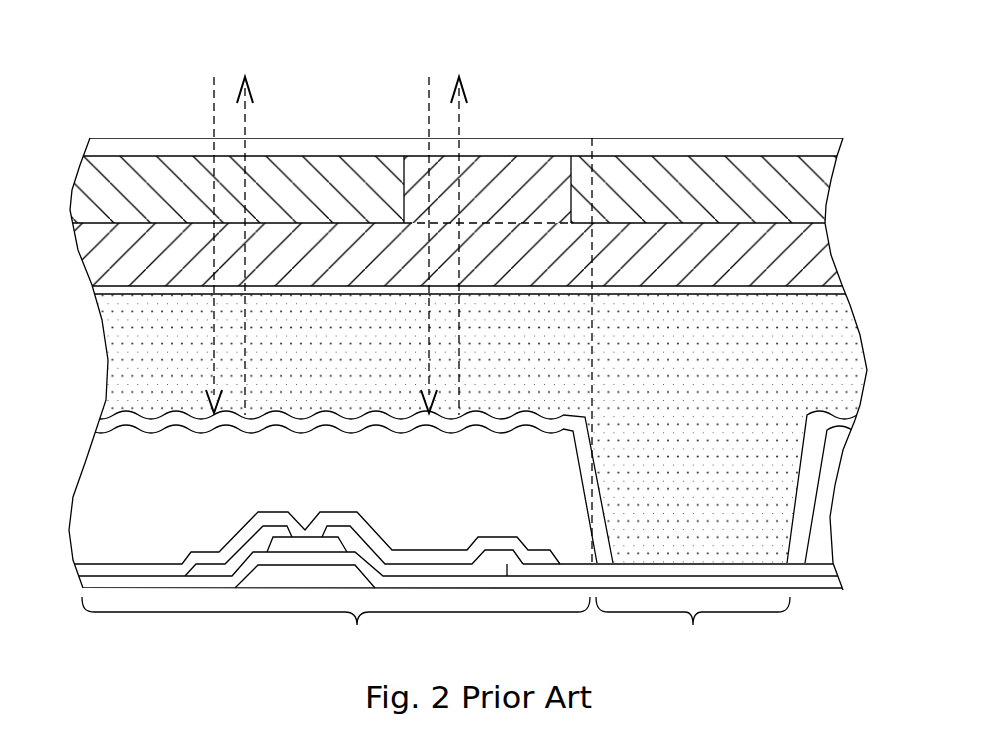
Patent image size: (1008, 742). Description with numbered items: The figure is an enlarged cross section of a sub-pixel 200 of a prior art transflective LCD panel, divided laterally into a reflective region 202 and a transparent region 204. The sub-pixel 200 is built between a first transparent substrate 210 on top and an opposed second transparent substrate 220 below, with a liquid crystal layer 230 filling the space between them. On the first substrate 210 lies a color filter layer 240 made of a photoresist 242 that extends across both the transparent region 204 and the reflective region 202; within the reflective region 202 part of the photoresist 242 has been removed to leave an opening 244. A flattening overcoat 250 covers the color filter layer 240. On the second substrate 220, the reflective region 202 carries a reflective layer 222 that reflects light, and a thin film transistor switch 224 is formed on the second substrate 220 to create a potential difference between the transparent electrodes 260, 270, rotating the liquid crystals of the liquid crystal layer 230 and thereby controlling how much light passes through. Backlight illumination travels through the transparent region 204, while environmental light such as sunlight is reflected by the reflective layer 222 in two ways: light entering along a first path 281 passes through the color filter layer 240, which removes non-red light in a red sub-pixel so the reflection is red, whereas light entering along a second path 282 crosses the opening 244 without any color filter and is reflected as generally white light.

The sub-pixel 200 is at (782, 78).
The reflective region 202 is at (336, 627).
The transparent region 204 is at (693, 627).
The first transparent substrate 210 is at (96, 150).
The second transparent substrate 220 is at (93, 583).
The reflective layer 222 is at (108, 426).
The thin film transistor switch 224 is at (255, 502).
The liquid crystal layer 230 is at (118, 357).
The color filter layer 240 is at (851, 157).
The photoresist 242 is at (288, 168).
The opening 244 is at (408, 166).
The flattening overcoat 250 is at (818, 249).
The transparent electrode 260 is at (843, 292).
The transparent electrode 270 is at (830, 569).
The first path 281 is at (205, 102).
The second path 282 is at (477, 105).